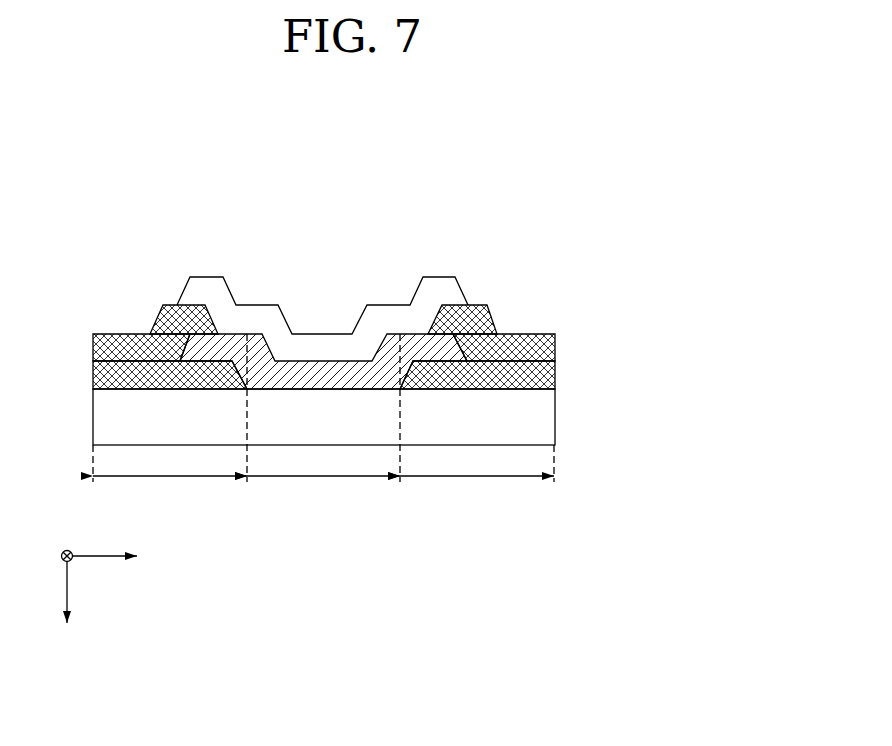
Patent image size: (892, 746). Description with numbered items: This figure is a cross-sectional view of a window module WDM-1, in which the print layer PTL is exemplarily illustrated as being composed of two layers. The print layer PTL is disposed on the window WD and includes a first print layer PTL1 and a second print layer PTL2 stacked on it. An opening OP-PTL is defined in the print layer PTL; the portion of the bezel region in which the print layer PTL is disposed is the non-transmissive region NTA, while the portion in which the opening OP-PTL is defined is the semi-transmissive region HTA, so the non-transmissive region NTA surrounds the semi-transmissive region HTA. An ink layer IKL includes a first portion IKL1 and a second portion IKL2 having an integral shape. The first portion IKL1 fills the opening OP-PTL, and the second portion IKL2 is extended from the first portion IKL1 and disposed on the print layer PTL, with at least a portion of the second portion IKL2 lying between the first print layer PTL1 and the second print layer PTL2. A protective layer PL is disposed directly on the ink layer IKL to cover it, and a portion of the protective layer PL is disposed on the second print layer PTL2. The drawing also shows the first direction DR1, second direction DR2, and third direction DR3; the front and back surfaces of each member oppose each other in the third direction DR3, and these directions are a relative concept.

The window module WDM-1 is at (468, 361).
The window WD is at (545, 422).
The print layer PTL is at (420, 364).
The first print layer PTL1 is at (555, 373).
The second print layer PTL2 is at (555, 338).
The opening OP-PTL is at (242, 377).
The ink layer IKL is at (409, 332).
The first portion IKL1 is at (338, 363).
The second portion IKL2 is at (447, 347).
The protective layer PL is at (448, 285).
The non-transmissive region NTA is at (323, 476).
The semi-transmissive region HTA is at (323, 492).
The first direction DR1 is at (127, 558).
The second direction DR2 is at (70, 543).
The third direction DR3 is at (70, 607).